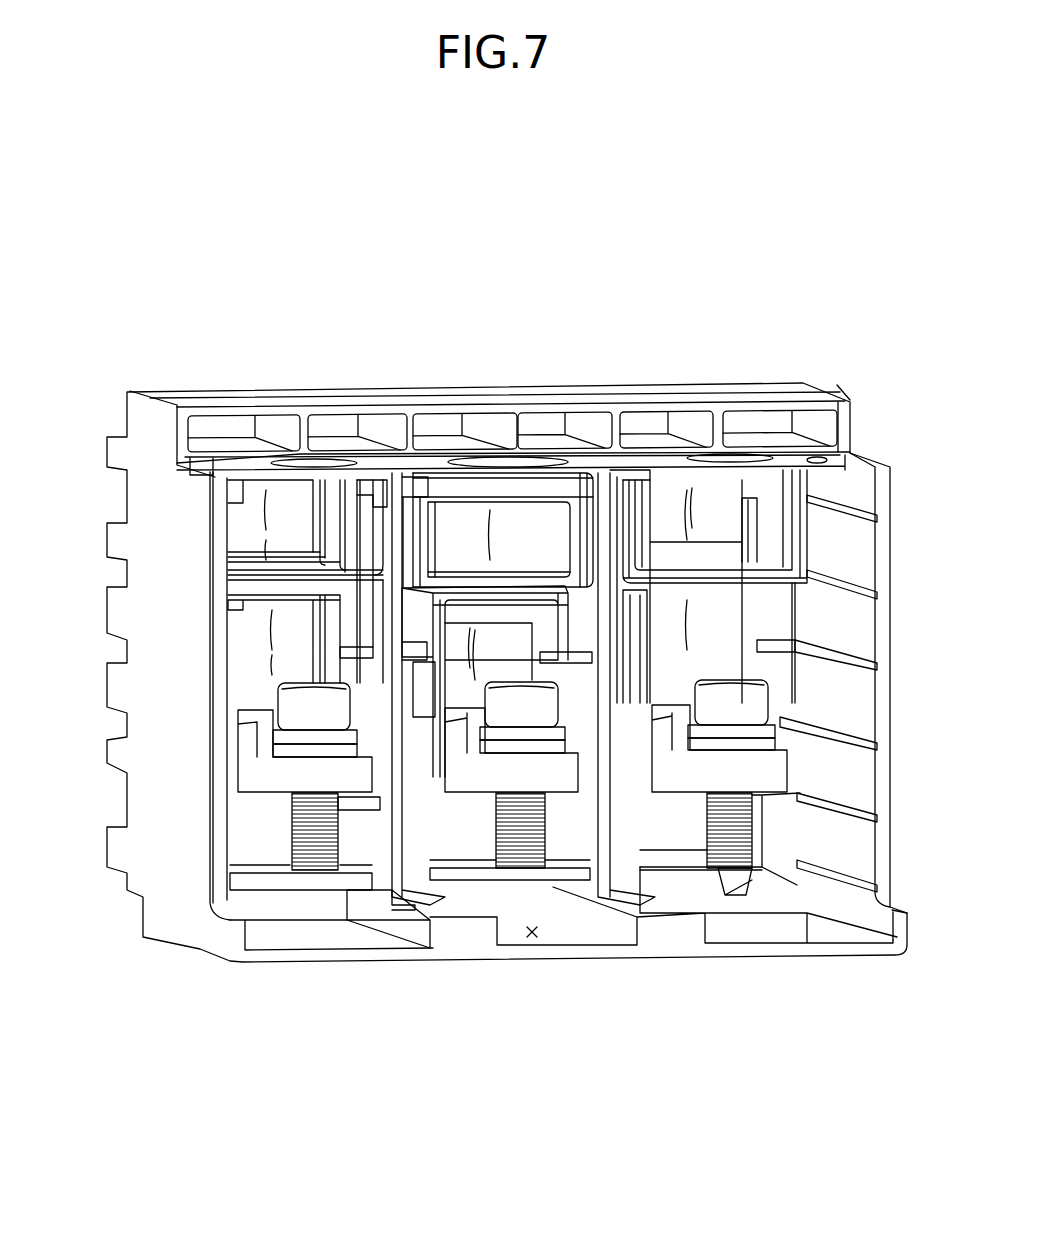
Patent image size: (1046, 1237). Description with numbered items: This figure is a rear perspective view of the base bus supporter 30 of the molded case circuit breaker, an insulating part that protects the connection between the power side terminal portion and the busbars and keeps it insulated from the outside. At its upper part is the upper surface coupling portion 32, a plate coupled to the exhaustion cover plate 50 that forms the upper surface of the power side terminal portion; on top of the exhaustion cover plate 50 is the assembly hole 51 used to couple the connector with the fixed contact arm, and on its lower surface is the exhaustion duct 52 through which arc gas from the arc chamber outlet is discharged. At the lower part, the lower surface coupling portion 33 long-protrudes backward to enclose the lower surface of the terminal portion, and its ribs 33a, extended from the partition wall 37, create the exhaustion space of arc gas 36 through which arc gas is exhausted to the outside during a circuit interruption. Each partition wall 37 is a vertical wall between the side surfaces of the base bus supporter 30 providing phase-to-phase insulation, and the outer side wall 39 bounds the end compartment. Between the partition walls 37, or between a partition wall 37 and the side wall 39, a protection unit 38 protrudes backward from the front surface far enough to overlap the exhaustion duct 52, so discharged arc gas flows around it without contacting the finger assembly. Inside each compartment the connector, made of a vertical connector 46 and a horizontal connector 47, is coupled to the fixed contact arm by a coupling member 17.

The coupling member 17 is at (288, 704).
The base bus supporter 30 is at (890, 638).
The upper surface coupling portion 32 is at (778, 445).
The lower surface coupling portion 33 is at (307, 938).
The ribs 33a is at (398, 888).
The exhaustion space of arc gas 36 is at (534, 938).
The partition wall 37 is at (400, 818).
The protection unit 38 is at (427, 615).
The side wall 39 is at (848, 697).
The vertical connector 46 is at (257, 663).
The horizontal connector 47 is at (298, 772).
The exhaustion cover plate 50 is at (800, 452).
The assembly hole 51 is at (738, 455).
The exhaustion duct 52 is at (790, 522).